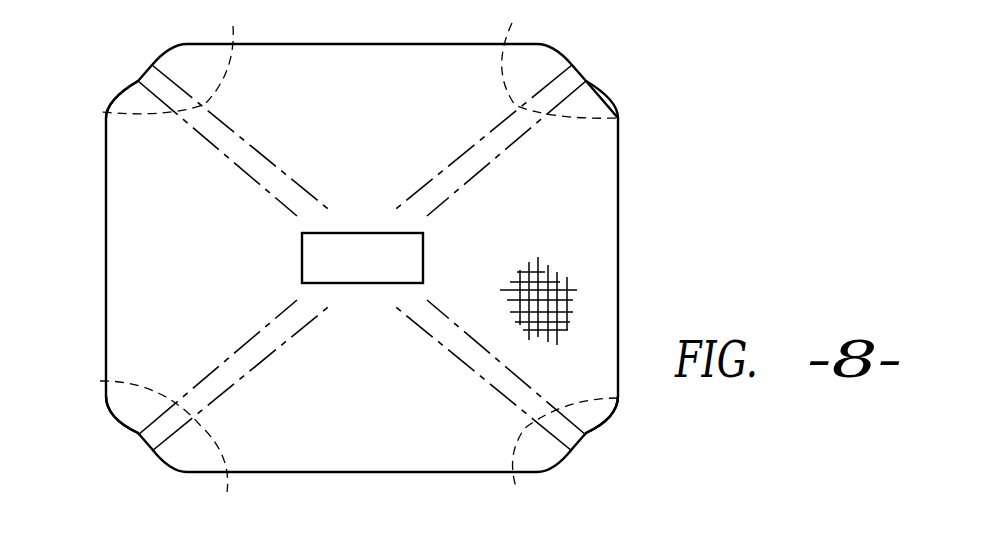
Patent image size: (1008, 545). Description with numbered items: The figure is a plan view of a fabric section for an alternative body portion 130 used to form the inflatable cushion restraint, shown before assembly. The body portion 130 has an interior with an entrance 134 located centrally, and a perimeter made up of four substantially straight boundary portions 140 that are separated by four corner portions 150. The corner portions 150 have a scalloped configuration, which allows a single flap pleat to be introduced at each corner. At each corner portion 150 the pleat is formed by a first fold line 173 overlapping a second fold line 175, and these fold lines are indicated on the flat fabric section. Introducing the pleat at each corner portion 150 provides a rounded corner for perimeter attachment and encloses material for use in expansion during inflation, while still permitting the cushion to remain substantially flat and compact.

The alternative body portion 130 is at (674, 176).
The entrance 134 is at (356, 233).
The substantially straight boundary portions 140 is at (360, 44).
The corner portions 150 is at (363, 254).
The first fold line 173 is at (359, 262).
The second fold line 175 is at (108, 115).